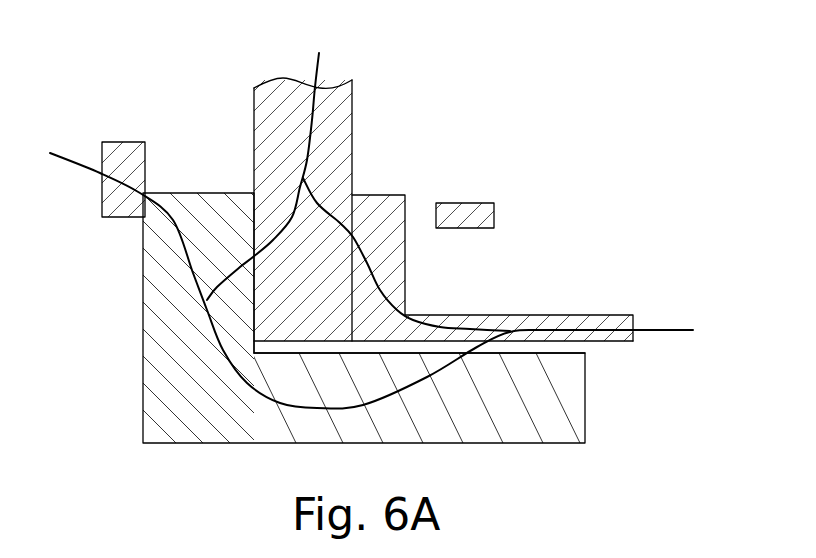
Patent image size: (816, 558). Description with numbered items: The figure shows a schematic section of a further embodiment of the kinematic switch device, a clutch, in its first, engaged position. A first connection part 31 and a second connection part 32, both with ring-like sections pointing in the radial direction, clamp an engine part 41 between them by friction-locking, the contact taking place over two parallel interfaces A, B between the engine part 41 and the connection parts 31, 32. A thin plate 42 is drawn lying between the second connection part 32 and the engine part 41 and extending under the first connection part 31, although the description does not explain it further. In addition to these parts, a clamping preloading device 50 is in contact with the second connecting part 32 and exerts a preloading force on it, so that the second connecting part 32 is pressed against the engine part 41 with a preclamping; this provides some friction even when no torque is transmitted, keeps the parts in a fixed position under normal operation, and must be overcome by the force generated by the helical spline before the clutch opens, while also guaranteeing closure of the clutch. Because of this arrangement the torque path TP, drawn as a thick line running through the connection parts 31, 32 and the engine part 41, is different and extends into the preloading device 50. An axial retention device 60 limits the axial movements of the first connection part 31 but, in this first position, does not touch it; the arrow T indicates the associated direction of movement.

The second connection part 32 is at (200, 433).
The engine part 41 is at (340, 132).
The thin plate 42 is at (590, 347).
The first connection part 31 is at (610, 318).
The clamping preloading device 50 is at (115, 217).
The axial retention device 60 is at (474, 203).
The torque path TP is at (322, 68).
The interface A is at (252, 252).
The interface B is at (371, 245).
The direction T is at (565, 212).